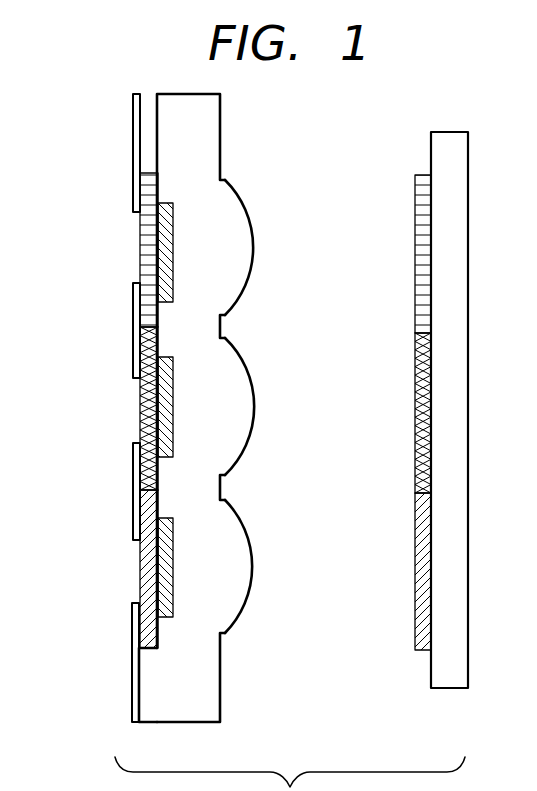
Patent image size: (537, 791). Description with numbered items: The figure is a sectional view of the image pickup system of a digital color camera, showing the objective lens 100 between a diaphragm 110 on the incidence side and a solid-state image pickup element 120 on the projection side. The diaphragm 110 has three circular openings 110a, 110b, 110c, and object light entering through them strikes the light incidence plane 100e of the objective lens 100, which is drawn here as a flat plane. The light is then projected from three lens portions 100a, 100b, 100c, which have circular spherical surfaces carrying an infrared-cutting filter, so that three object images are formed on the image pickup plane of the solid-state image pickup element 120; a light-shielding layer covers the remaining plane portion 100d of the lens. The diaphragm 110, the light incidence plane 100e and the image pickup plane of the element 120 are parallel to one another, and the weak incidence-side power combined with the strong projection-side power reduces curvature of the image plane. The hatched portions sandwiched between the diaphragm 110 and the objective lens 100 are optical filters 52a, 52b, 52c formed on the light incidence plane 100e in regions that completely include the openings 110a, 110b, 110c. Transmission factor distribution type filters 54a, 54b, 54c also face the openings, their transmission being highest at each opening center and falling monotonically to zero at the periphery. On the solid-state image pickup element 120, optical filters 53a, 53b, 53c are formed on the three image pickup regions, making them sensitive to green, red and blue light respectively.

The objective lens 100 is at (219, 94).
The lens portion 100a is at (245, 210).
The lens portion 100b is at (247, 370).
The lens portion 100c is at (247, 530).
The plane portion 100d is at (209, 680).
The light incidence plane 100e is at (152, 700).
The diaphragm 110 is at (131, 148).
The diaphragm opening 110a is at (131, 233).
The diaphragm opening 110b is at (130, 390).
The diaphragm opening 110c is at (130, 550).
The optical filter 52a is at (148, 253).
The optical filter 52b is at (142, 412).
The optical filter 52c is at (142, 572).
The transmission factor distribution type filter 54a is at (173, 252).
The transmission factor distribution type filter 54b is at (173, 410).
The transmission factor distribution type filter 54c is at (173, 570).
The solid-state image pickup element 120 is at (457, 135).
The optical filter 53a is at (418, 242).
The optical filter 53b is at (418, 404).
The optical filter 53c is at (418, 556).